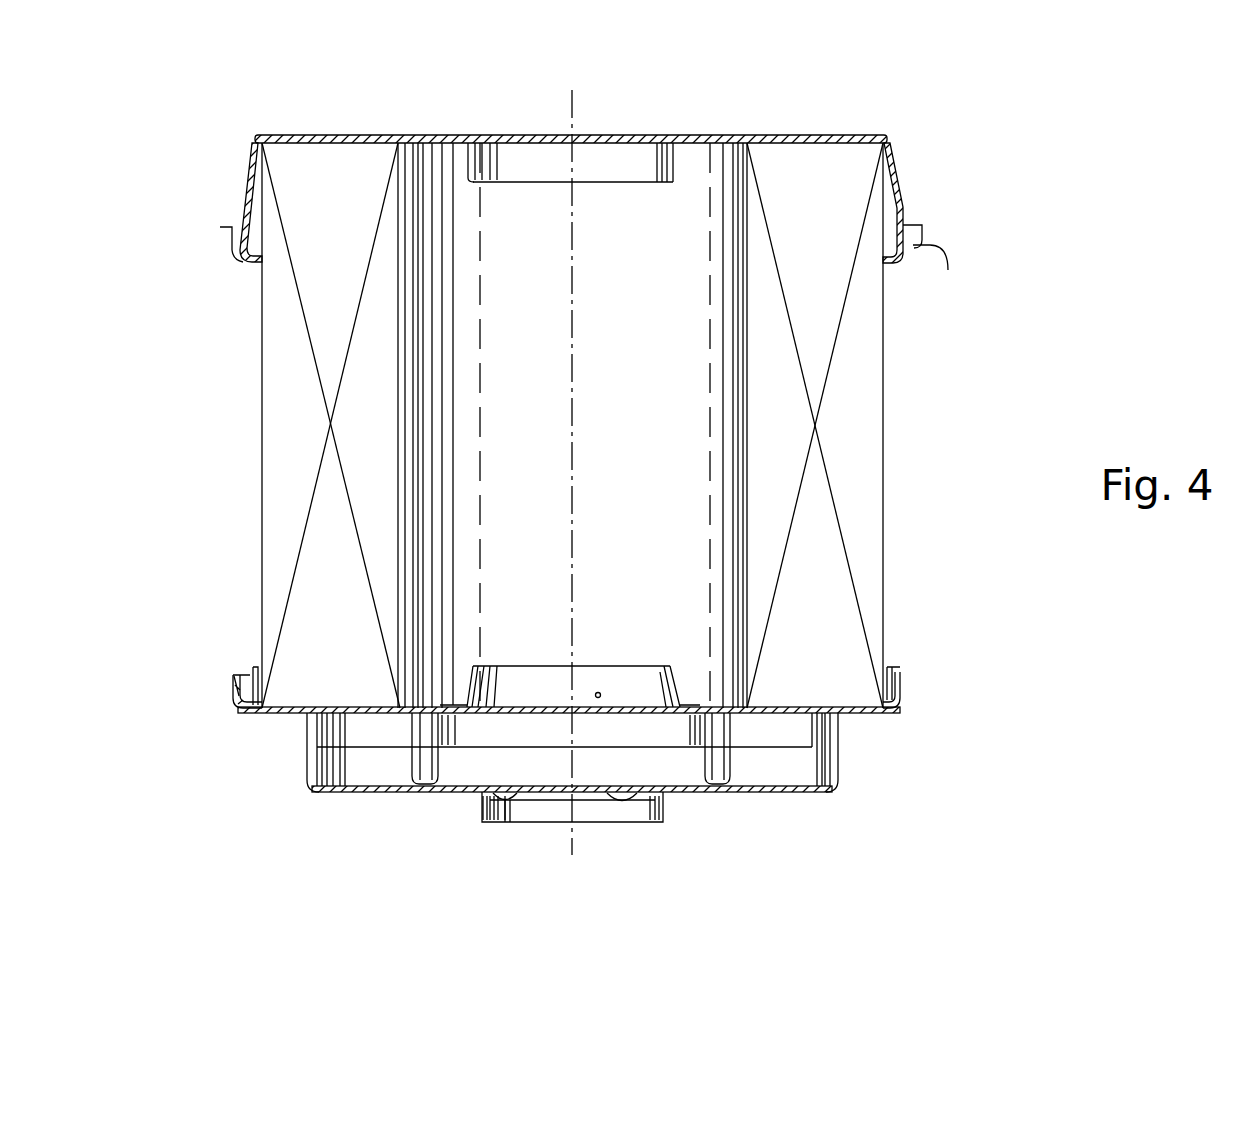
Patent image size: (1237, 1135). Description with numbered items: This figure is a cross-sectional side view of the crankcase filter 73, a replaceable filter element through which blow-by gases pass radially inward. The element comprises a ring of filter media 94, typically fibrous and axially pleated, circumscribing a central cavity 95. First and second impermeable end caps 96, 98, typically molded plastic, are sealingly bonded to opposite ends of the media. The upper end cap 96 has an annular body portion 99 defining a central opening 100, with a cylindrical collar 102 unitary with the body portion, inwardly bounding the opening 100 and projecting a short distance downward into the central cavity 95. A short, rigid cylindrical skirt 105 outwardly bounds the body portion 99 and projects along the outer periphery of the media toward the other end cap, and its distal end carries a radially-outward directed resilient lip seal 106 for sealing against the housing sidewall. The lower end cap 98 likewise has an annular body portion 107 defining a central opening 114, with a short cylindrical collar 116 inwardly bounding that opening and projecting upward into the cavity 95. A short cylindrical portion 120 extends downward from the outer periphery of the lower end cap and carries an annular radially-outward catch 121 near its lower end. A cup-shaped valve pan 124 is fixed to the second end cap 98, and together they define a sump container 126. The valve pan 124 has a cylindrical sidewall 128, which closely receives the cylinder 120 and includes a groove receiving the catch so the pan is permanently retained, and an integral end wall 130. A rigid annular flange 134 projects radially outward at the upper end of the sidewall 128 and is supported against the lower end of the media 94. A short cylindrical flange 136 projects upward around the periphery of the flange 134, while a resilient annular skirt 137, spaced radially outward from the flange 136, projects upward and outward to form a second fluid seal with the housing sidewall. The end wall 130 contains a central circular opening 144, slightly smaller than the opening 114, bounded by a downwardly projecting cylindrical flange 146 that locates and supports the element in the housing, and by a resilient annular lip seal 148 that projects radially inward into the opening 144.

The crankcase filter 73 is at (258, 535).
The filter media 94 is at (848, 432).
The central cavity 95 is at (647, 478).
The first end cap 96 is at (240, 188).
The second end cap 98 is at (347, 707).
The annular body portion 99 is at (772, 136).
The central opening 100 is at (618, 165).
The cylindrical collar 102 is at (488, 160).
The cylindrical skirt 105 is at (903, 182).
The lip seal 106 is at (930, 246).
The annular body portion 107 is at (692, 697).
The central opening 114 is at (543, 689).
The cylindrical collar 116 is at (465, 680).
The cylindrical portion 120 is at (858, 762).
The catch 121 is at (818, 765).
The valve pan 124 is at (825, 793).
The sump container 126 is at (386, 770).
The cylindrical sidewall 128 is at (312, 772).
The end wall 130 is at (742, 790).
The annular flange 134 is at (872, 716).
The cylindrical flange 136 is at (896, 668).
The annular skirt 137 is at (905, 690).
The central circular opening 144 is at (553, 812).
The cylindrical flange 146 is at (484, 798).
The annular seal 148 is at (600, 816).